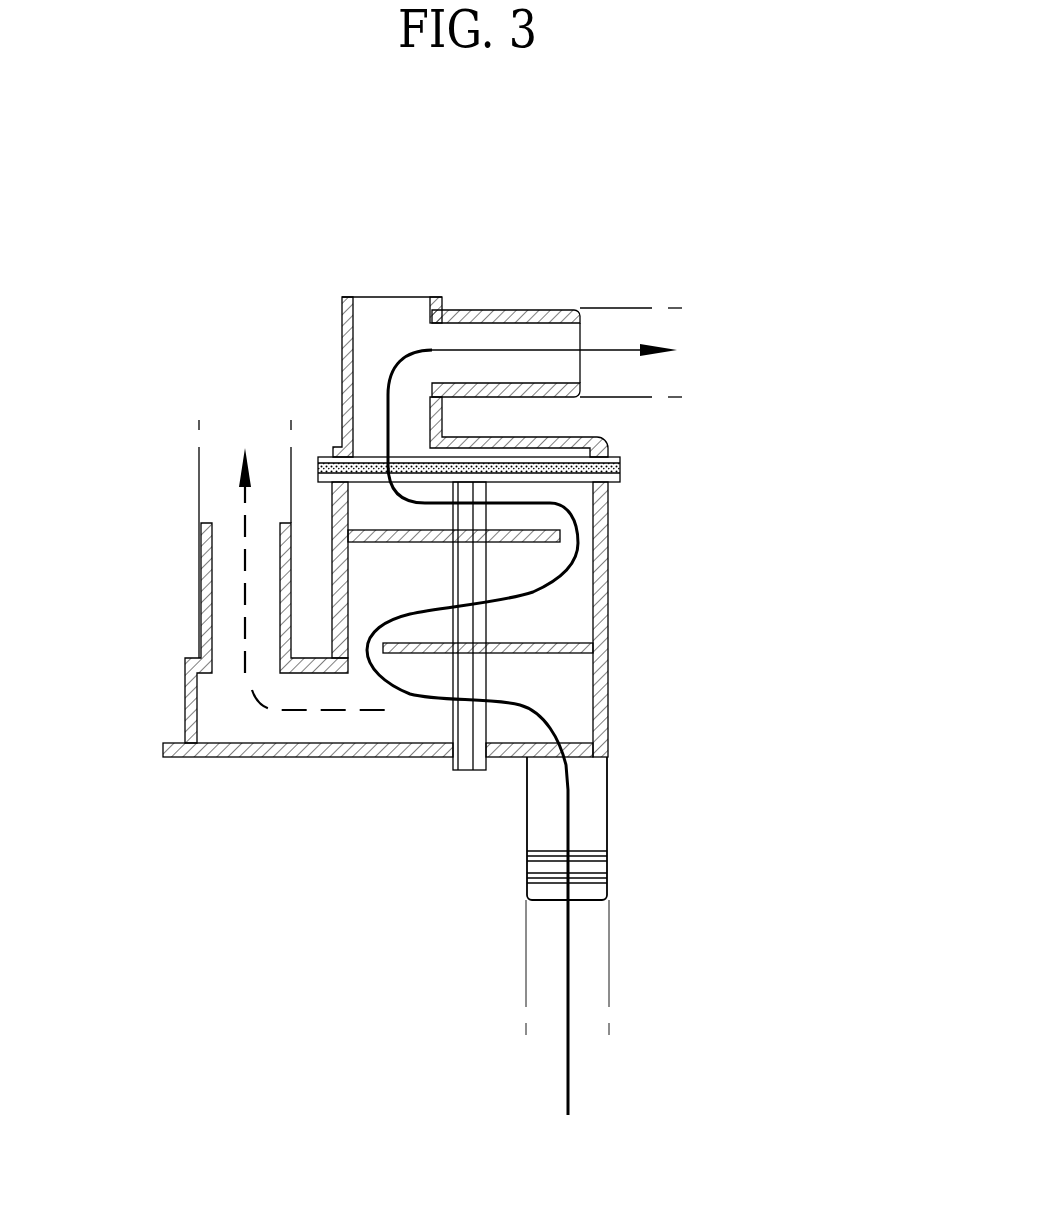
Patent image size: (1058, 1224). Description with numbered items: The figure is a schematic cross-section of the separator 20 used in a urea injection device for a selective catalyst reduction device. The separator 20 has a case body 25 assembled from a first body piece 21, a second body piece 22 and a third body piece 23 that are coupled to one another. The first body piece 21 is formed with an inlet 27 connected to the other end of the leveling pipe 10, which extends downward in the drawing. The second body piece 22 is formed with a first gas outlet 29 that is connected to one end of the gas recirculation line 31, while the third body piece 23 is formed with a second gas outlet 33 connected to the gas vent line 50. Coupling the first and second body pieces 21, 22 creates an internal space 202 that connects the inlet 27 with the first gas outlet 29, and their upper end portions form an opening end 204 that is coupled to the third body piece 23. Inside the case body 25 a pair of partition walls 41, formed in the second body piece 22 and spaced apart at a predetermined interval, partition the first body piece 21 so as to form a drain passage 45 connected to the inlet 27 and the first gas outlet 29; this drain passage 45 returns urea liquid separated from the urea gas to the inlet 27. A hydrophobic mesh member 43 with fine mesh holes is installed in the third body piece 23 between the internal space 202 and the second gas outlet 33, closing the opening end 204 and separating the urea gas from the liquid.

The leveling pipe 10 is at (608, 937).
The separator 20 is at (452, 143).
The first body piece 21 is at (607, 622).
The second body piece 22 is at (330, 567).
The third body piece 23 is at (513, 442).
The case body 25 is at (628, 557).
The inlet 27 is at (608, 808).
The first gas outlet 29 is at (200, 582).
The gas recirculation line 31 is at (200, 492).
The second gas outlet 33 is at (503, 310).
The partition walls 41 is at (368, 542).
The hydrophobic mesh member 43 is at (352, 465).
The drain passage 45 is at (560, 593).
The gas vent line 50 is at (613, 307).
The internal space 202 is at (327, 727).
The opening end 204 is at (370, 488).